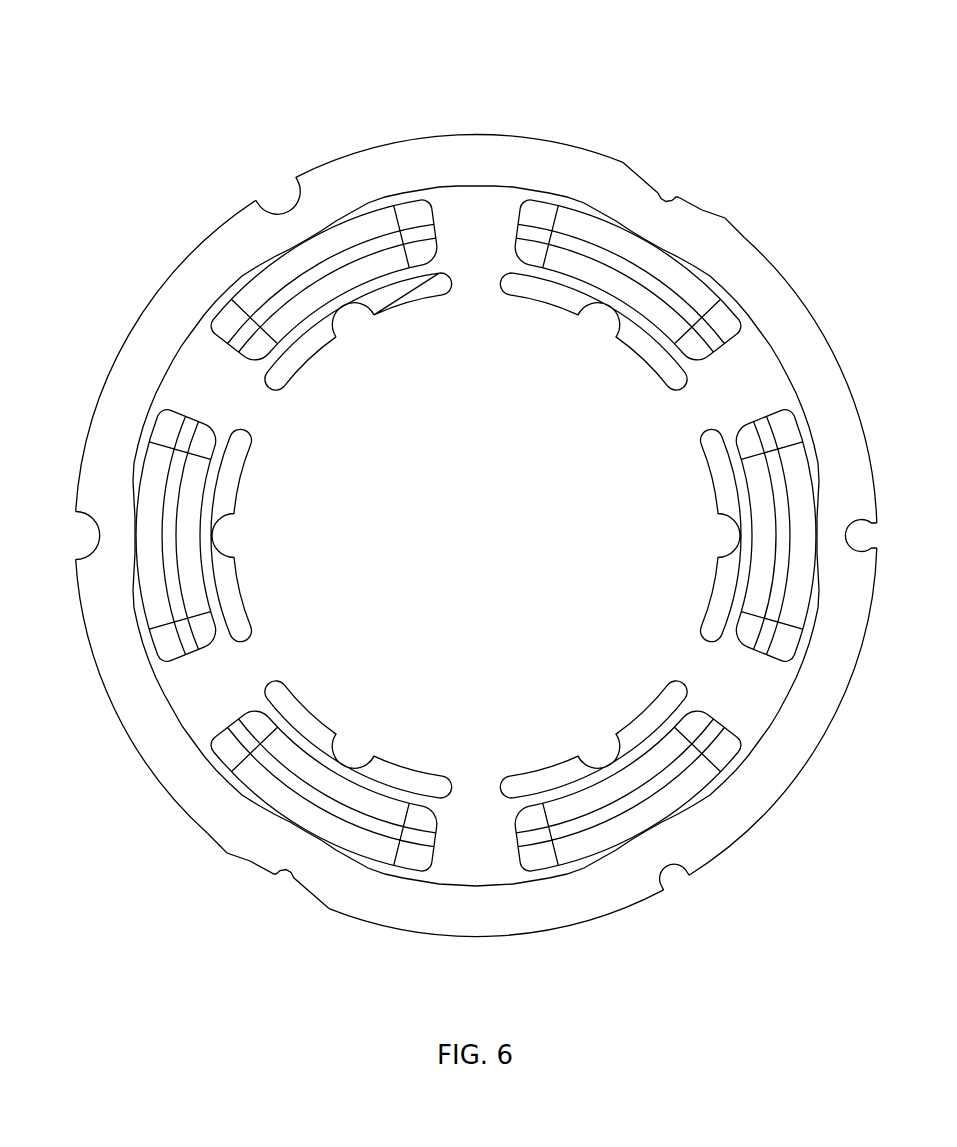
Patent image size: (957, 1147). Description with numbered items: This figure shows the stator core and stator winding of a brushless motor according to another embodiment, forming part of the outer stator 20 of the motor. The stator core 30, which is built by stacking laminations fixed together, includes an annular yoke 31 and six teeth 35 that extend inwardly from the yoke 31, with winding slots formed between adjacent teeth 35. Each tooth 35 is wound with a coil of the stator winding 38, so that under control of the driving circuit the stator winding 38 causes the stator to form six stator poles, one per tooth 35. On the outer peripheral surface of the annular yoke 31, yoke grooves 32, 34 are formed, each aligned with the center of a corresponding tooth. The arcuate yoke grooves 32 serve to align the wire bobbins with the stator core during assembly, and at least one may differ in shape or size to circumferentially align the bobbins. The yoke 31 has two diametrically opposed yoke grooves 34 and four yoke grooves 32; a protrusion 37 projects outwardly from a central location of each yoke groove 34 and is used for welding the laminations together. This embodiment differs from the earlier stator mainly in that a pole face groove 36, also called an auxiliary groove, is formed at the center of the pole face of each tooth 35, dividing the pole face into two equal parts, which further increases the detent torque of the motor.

The stator 20 is at (360, 106).
The stator core 30 is at (525, 150).
The annular yoke 31 is at (150, 330).
The yoke groove 32 is at (291, 192).
The yoke groove 34 is at (649, 175).
The tooth 35 is at (290, 374).
The pole face groove 36 is at (348, 312).
The protrusion 37 is at (676, 191).
The stator winding 38 is at (263, 300).